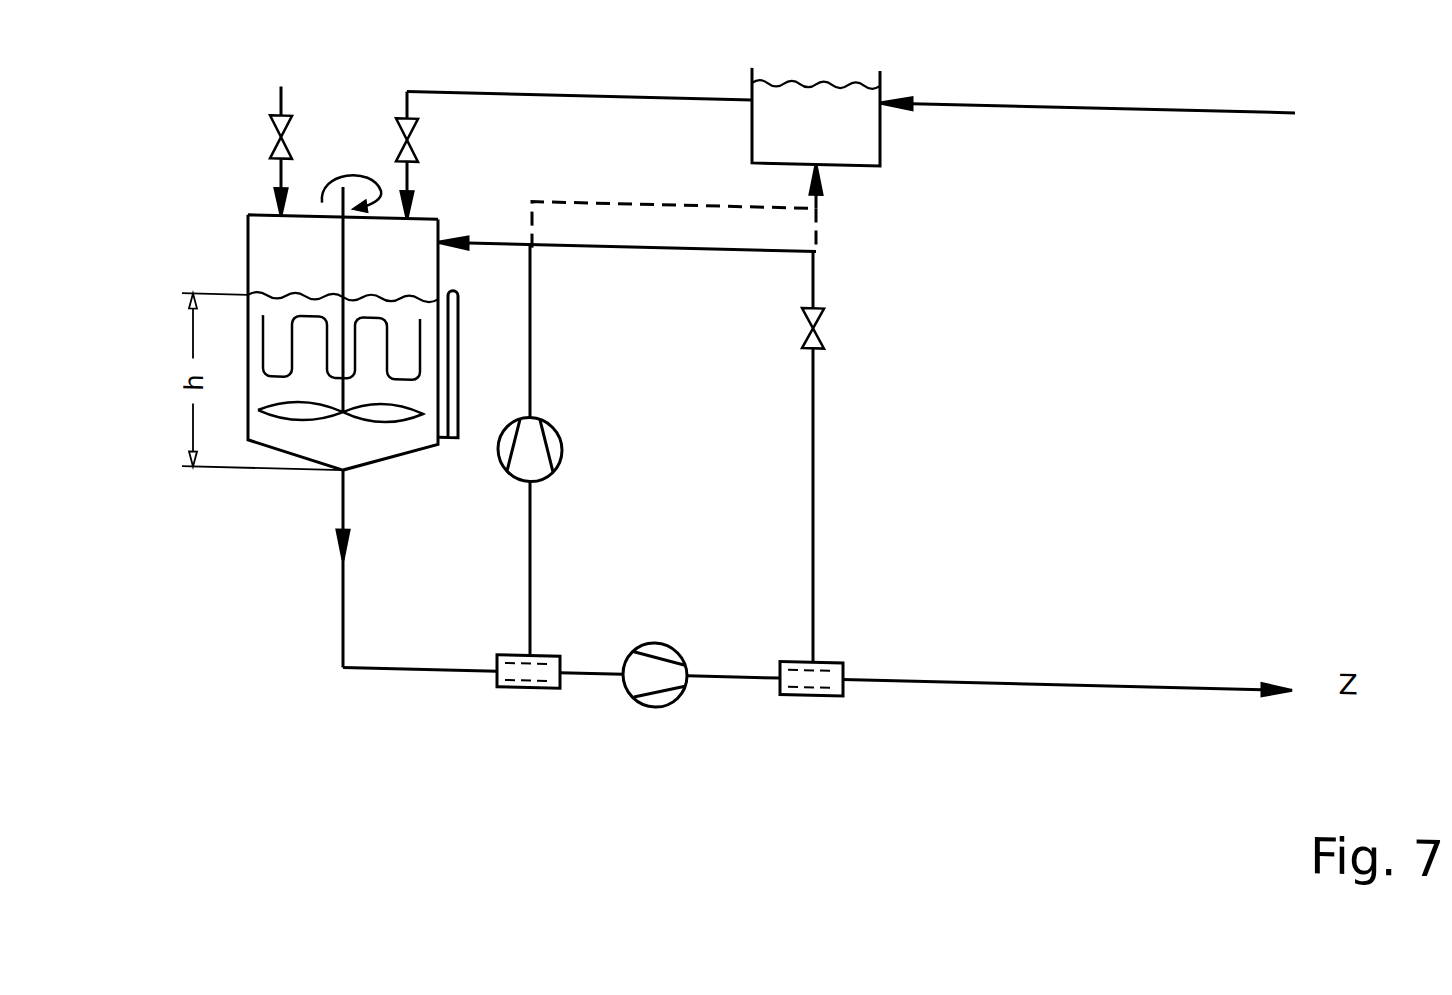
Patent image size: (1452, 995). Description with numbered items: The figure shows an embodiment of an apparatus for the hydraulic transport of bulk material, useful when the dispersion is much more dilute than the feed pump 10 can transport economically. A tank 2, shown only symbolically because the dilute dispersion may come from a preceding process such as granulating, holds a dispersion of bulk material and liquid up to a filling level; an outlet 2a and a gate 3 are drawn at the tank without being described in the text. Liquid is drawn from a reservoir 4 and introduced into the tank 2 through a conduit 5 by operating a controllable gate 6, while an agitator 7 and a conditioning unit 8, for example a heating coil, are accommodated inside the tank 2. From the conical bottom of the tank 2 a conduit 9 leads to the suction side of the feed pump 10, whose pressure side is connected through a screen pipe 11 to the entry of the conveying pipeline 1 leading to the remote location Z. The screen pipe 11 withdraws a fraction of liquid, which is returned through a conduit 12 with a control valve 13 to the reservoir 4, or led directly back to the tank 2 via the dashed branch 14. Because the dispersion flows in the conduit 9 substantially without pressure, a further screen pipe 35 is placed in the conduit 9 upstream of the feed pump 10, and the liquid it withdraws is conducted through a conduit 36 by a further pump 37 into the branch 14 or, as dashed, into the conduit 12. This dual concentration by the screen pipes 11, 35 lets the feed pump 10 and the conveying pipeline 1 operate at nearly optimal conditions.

The conveying pipeline 1 is at (1058, 671).
The tank 2 is at (248, 249).
The level measuring tube 2a is at (462, 287).
The feed valve 3 is at (276, 160).
The reservoir 4 is at (884, 145).
The conduit 5 is at (683, 86).
The controllable gate 6 is at (416, 148).
The agitator 7 is at (258, 414).
The conditioning unit 8 is at (265, 339).
The conduit 9 is at (338, 630).
The feed pump 10 is at (655, 699).
The screen pipe 11 is at (813, 689).
The conduit 12 is at (822, 506).
The control valve 13 is at (824, 322).
The dashed line 14 is at (677, 248).
The further screen pipe 35 is at (527, 686).
The conduit 36 is at (540, 545).
The further pump 37 is at (562, 440).